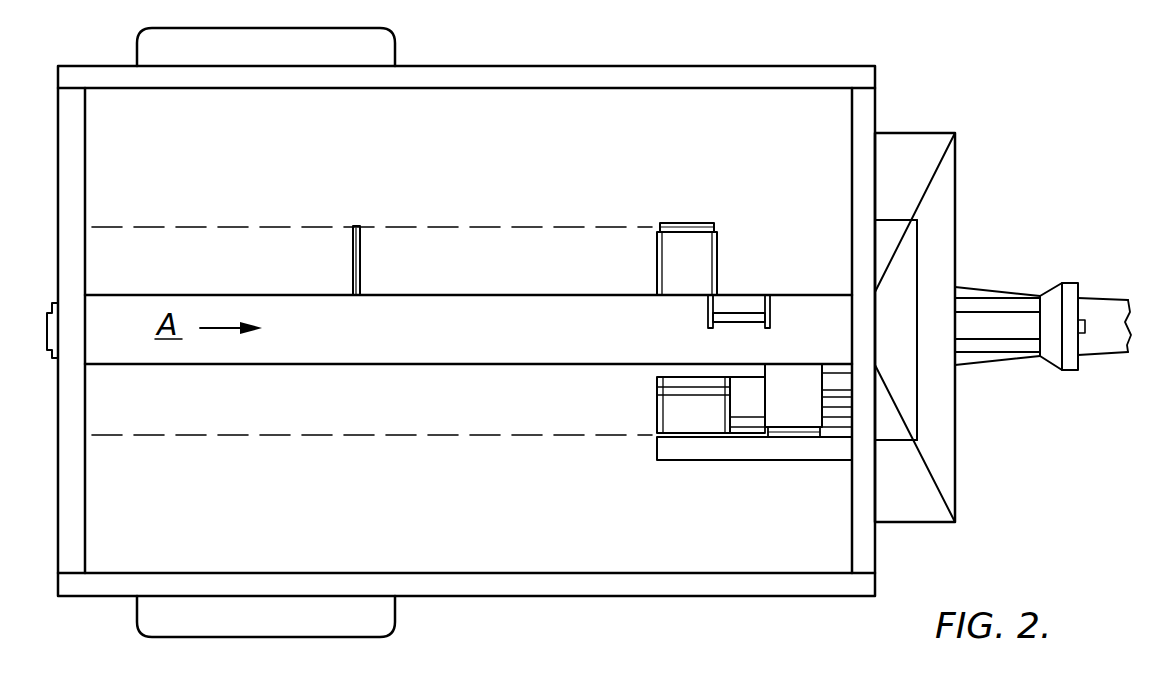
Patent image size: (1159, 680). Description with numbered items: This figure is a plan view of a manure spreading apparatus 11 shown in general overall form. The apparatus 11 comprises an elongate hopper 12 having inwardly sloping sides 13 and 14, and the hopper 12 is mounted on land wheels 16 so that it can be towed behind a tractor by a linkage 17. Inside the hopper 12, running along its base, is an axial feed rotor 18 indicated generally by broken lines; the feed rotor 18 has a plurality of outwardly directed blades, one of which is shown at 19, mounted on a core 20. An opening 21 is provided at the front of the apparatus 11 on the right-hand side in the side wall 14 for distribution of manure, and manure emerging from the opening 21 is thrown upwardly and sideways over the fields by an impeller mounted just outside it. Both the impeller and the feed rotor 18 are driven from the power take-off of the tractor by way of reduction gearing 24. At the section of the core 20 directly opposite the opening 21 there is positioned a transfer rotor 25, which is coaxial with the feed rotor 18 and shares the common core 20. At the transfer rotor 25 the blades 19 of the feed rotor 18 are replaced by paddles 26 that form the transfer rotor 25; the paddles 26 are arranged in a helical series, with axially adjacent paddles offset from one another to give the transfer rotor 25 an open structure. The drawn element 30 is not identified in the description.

The manure spreading apparatus 11 is at (856, 60).
The elongate hopper 12 is at (563, 116).
The inwardly sloping side 13 is at (509, 78).
The inwardly sloping side wall 14 is at (540, 580).
The land wheels 16 is at (380, 608).
The linkage 17 is at (1122, 314).
The axial feed rotor 18 is at (432, 222).
The blade 19 is at (313, 295).
The core 20 is at (208, 295).
The opening 21 is at (657, 422).
The reduction gearing 24 is at (958, 236).
The transfer rotor 25 is at (740, 276).
The paddles 26 is at (690, 258).
The stop block 30 is at (650, 225).